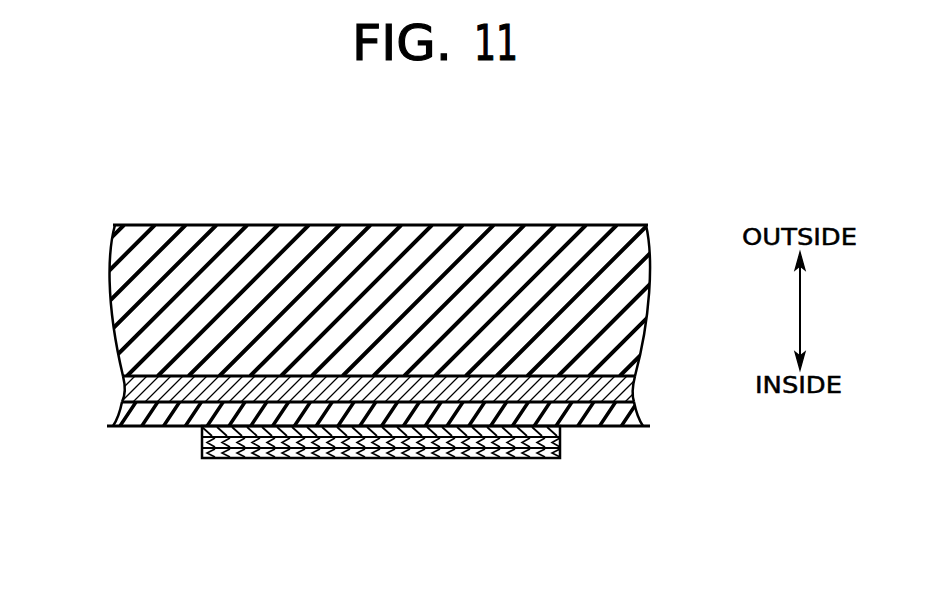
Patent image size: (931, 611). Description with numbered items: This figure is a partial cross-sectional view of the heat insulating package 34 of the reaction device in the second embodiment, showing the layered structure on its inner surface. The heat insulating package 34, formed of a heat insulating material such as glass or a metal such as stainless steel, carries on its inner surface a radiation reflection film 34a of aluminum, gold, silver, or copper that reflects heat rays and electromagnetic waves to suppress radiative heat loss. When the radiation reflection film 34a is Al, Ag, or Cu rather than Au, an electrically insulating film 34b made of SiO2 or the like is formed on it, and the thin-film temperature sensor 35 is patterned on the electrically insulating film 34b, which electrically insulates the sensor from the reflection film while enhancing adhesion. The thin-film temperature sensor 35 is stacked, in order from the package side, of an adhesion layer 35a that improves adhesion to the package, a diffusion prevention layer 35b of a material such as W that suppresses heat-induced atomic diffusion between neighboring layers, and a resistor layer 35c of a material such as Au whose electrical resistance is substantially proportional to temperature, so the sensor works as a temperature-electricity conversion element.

The heat insulating package 34 is at (452, 265).
The radiation reflection film 34a is at (130, 378).
The electrically insulating film 34b is at (120, 405).
The thin-film temperature sensor 35 is at (426, 482).
The adhesion layer 35a is at (246, 436).
The diffusion prevention layer 35b is at (348, 443).
The resistor layer 35c is at (485, 453).